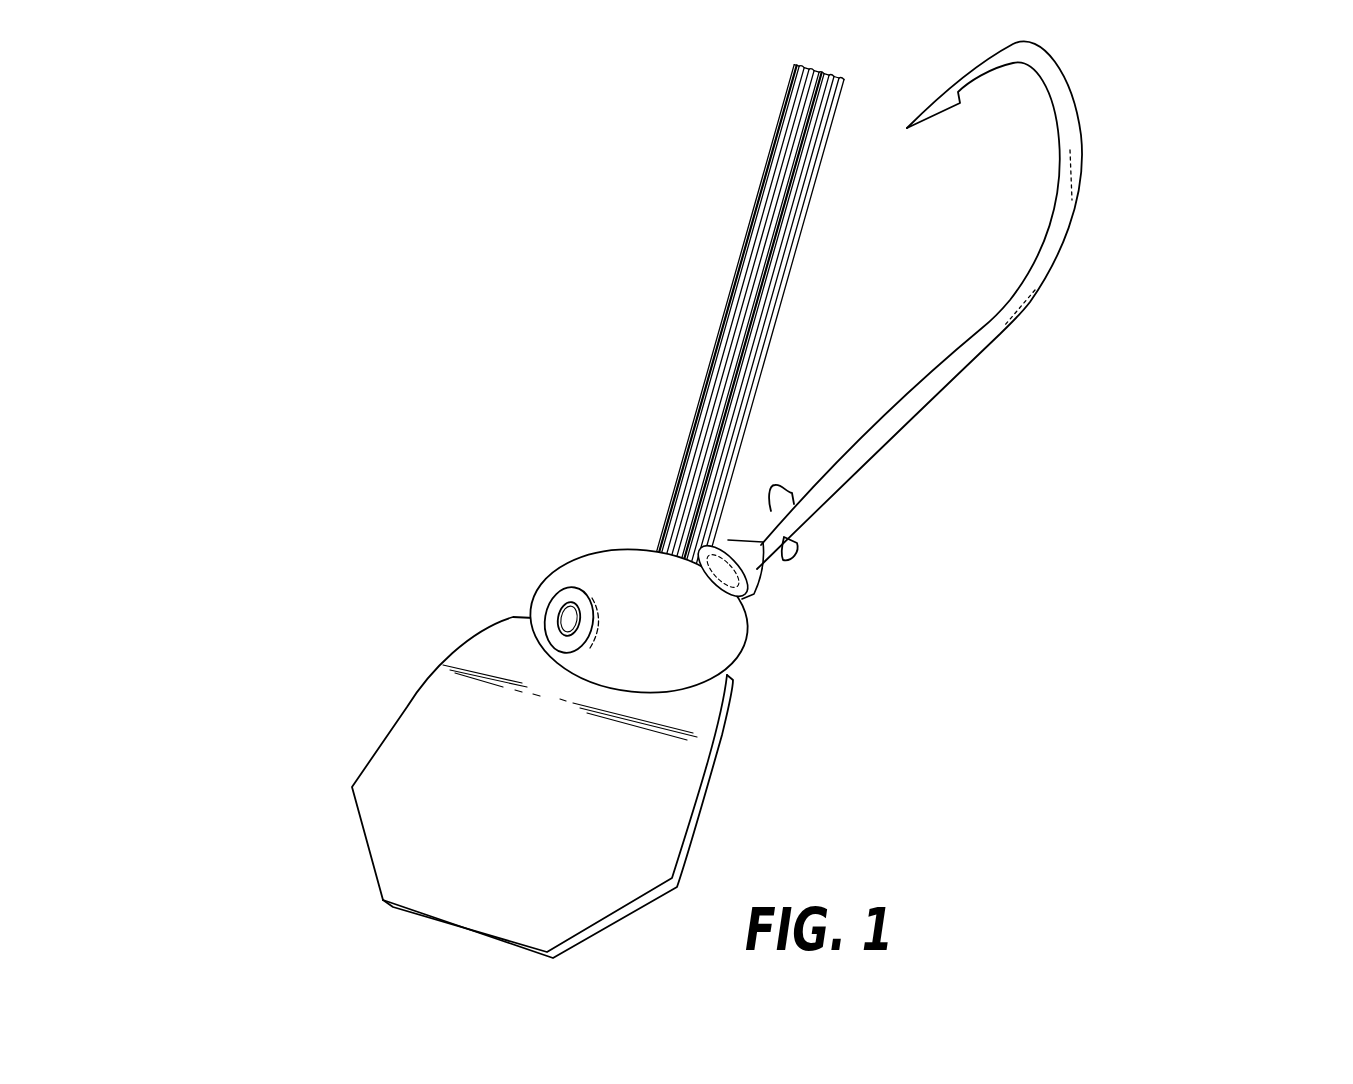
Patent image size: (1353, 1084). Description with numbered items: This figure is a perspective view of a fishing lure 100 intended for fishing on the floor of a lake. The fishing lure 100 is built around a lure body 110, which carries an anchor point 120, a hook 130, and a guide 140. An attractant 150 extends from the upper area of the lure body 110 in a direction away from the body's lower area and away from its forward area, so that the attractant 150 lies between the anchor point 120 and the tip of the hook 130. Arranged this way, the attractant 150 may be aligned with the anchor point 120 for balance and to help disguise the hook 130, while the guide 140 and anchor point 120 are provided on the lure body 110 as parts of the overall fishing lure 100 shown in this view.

The fishing lure 100 is at (326, 235).
The lure body 110 is at (611, 530).
The anchor point 120 is at (530, 606).
The hook 130 is at (1073, 321).
The guide 140 is at (322, 719).
The attractant 150 is at (709, 222).